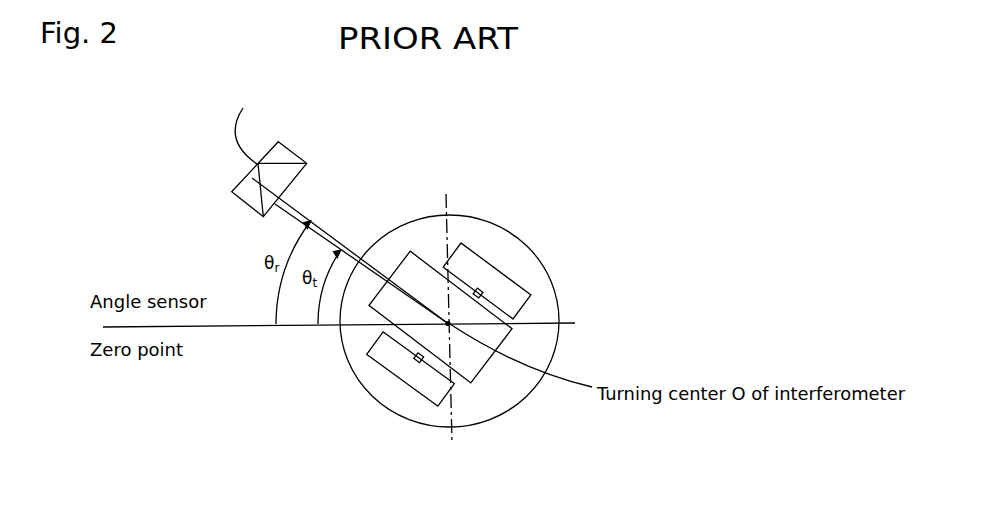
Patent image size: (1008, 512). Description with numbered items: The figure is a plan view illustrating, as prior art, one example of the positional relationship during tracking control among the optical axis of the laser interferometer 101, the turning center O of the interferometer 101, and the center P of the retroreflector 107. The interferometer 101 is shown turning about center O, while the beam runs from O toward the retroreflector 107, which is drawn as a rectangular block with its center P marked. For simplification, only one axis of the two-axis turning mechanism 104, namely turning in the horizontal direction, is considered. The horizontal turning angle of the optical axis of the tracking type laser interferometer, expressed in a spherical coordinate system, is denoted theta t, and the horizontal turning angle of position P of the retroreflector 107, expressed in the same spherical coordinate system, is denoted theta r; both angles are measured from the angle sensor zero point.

The laser interferometer 101 is at (467, 363).
The two-axis turning mechanism 104 is at (500, 282).
The retroreflector 107 is at (288, 146).